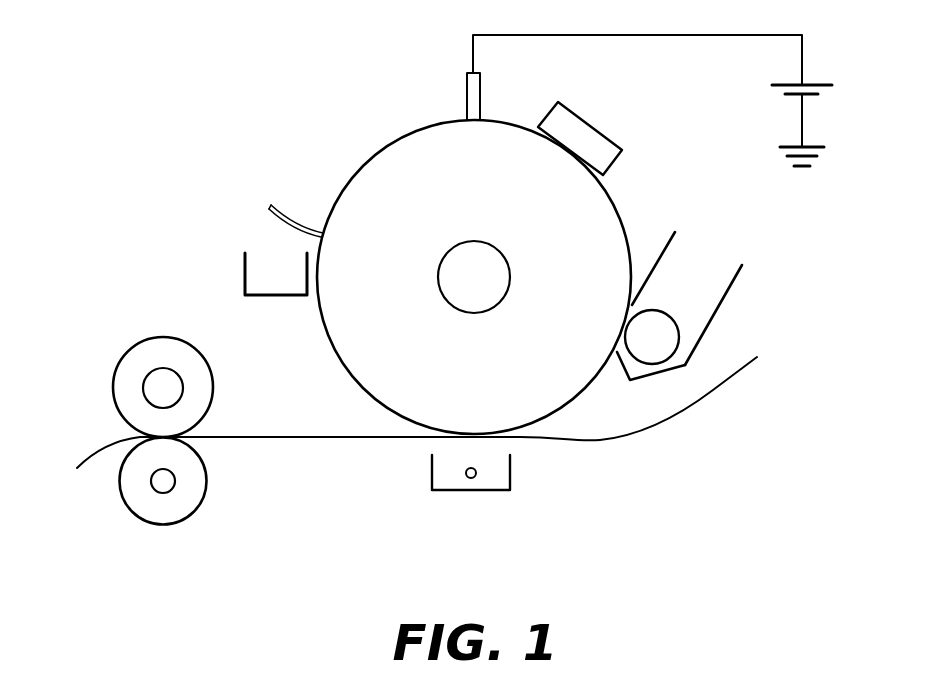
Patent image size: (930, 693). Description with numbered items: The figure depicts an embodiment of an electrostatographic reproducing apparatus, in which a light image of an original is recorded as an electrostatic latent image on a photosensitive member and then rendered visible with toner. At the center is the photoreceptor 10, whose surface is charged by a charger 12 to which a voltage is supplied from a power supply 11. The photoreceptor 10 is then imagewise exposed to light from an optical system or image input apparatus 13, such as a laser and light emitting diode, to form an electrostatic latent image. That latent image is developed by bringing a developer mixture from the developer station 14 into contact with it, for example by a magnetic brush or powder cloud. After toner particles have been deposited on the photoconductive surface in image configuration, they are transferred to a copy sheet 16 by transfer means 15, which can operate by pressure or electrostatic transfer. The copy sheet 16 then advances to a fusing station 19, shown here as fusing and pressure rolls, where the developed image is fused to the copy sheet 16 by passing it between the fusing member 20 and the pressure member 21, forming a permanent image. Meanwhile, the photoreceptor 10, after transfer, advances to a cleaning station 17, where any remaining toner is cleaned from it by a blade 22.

The photoreceptor 10 is at (623, 215).
The power supply 11 is at (803, 62).
The charger 12 is at (476, 100).
The image input apparatus 13 is at (597, 140).
The developer station 14 is at (688, 282).
The transfer means 15 is at (510, 487).
The copy sheet 16 is at (710, 393).
The cleaning station 17 is at (259, 230).
The fusing station 19 is at (99, 392).
The fusing member 20 is at (205, 373).
The pressure member 21 is at (200, 487).
The blade 22 is at (289, 222).